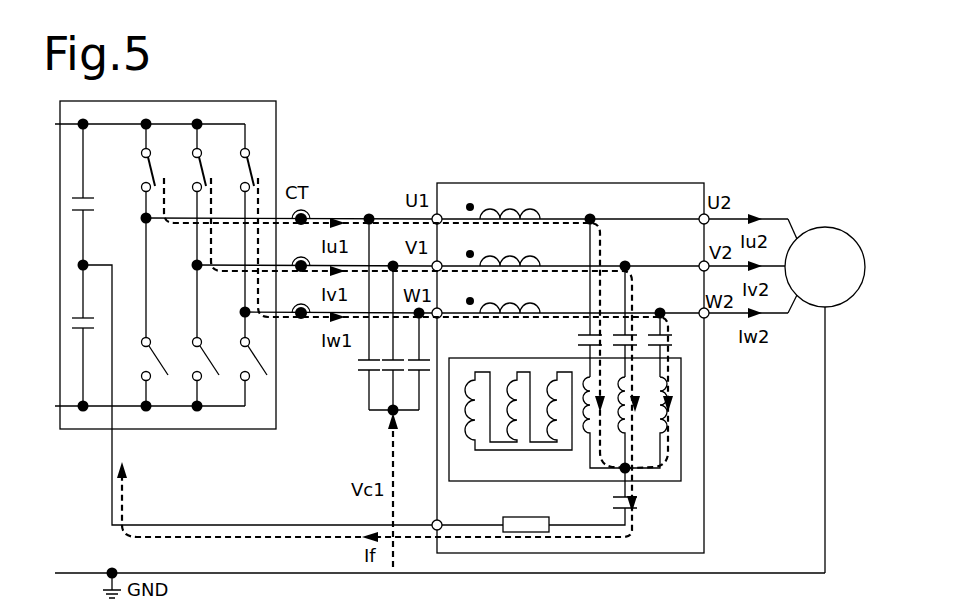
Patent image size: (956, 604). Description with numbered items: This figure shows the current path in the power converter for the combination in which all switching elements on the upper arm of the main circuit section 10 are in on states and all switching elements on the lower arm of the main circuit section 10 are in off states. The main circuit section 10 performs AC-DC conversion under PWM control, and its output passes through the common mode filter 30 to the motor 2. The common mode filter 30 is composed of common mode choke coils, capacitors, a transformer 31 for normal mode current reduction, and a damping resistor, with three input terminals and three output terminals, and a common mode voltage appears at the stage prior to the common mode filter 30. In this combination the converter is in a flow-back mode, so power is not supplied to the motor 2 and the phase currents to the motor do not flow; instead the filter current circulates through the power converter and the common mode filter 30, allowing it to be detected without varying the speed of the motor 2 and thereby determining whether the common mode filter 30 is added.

The main circuit section 10 is at (276, 143).
The common mode filter 30 is at (497, 183).
The transformer 31 is at (681, 437).
The motor 2 is at (825, 267).